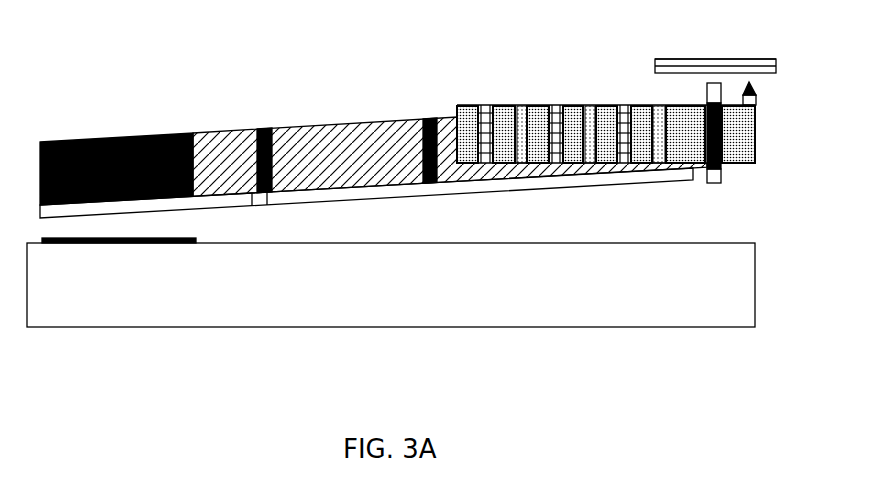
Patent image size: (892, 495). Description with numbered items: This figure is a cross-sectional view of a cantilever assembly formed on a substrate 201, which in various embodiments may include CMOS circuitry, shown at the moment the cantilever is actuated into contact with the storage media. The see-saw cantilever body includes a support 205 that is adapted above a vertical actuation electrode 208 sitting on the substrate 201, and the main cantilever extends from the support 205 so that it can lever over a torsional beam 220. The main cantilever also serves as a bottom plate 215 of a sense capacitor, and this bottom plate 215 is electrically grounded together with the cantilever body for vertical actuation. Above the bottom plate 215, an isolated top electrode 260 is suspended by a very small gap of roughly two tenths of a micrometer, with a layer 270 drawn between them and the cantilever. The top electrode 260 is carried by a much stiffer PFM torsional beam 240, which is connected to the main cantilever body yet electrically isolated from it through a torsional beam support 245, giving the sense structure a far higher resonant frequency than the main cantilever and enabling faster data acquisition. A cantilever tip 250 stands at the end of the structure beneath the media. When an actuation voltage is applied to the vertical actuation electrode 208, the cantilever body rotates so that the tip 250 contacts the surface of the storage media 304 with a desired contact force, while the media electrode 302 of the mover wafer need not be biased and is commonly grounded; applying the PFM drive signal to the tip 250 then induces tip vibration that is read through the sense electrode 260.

The substrate 201 is at (403, 293).
The support 205 is at (95, 138).
The vertical actuation electrode 208 is at (167, 245).
The bottom plate 215 is at (377, 198).
The torsional beam 220 is at (262, 205).
The PFM torsional beam 240 is at (717, 185).
The torsional beam support 245 is at (707, 100).
The cantilever tip 250 is at (755, 90).
The top electrode 260 is at (508, 105).
The insulating layer 270 is at (522, 170).
The media electrode 302 is at (673, 59).
The storage media 304 is at (653, 59).